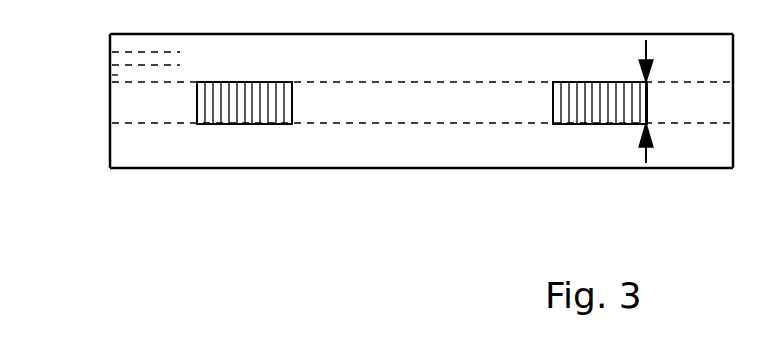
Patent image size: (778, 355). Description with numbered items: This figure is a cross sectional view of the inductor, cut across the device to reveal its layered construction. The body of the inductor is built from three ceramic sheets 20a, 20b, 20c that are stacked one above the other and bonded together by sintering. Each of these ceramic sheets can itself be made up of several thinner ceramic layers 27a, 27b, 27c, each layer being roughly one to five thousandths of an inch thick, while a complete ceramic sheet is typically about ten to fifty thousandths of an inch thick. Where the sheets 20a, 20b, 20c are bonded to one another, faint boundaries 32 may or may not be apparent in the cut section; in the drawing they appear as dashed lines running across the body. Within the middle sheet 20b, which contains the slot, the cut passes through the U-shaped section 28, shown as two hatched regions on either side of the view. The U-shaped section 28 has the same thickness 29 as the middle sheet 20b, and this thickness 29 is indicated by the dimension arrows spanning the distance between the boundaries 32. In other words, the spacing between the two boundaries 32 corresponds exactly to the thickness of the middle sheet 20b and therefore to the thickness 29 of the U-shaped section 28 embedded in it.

The ceramic sheet 20a is at (421, 145).
The middle sheet 20b is at (421, 102).
The ceramic sheet 20c is at (421, 58).
The ceramic layer 27a is at (110, 42).
The ceramic layer 27b is at (110, 57).
The ceramic layer 27c is at (110, 76).
The U-shaped section 28 is at (237, 97).
The thickness 29 is at (648, 52).
The boundaries 32 is at (328, 80).